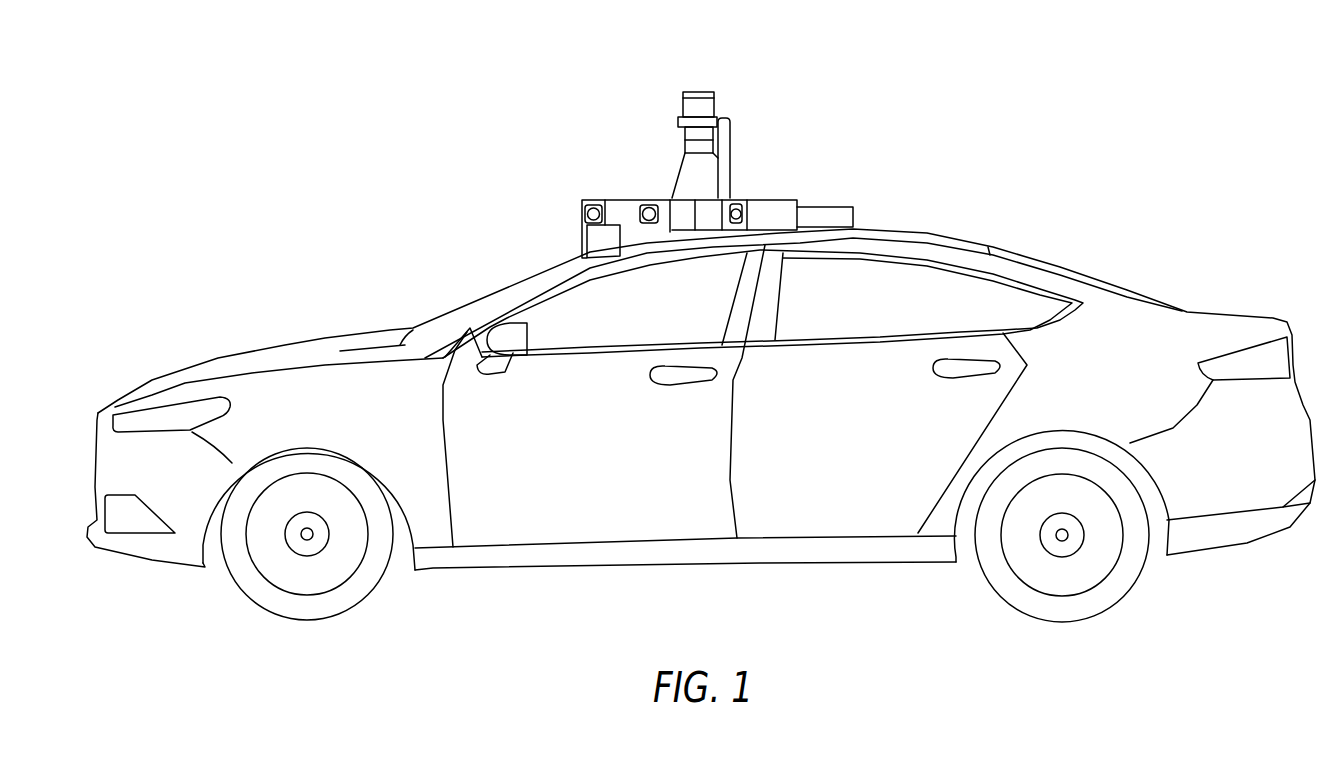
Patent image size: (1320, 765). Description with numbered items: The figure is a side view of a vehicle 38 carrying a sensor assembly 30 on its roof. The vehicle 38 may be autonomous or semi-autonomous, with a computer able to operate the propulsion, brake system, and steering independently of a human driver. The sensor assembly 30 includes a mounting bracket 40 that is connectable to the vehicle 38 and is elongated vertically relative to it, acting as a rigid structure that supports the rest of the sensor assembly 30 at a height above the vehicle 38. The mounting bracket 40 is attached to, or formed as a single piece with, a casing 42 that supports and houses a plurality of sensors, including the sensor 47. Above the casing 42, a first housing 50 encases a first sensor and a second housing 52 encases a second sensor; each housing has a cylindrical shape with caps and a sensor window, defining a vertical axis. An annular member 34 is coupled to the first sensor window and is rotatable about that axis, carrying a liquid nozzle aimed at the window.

The sensor assembly 30 is at (748, 82).
The annular member 34 is at (680, 122).
The vehicle 38 is at (1022, 82).
The mounting bracket 40 is at (675, 183).
The casing 42 is at (603, 199).
The sensor 47 is at (585, 213).
The first housing 50 is at (694, 91).
The second housing 52 is at (684, 146).